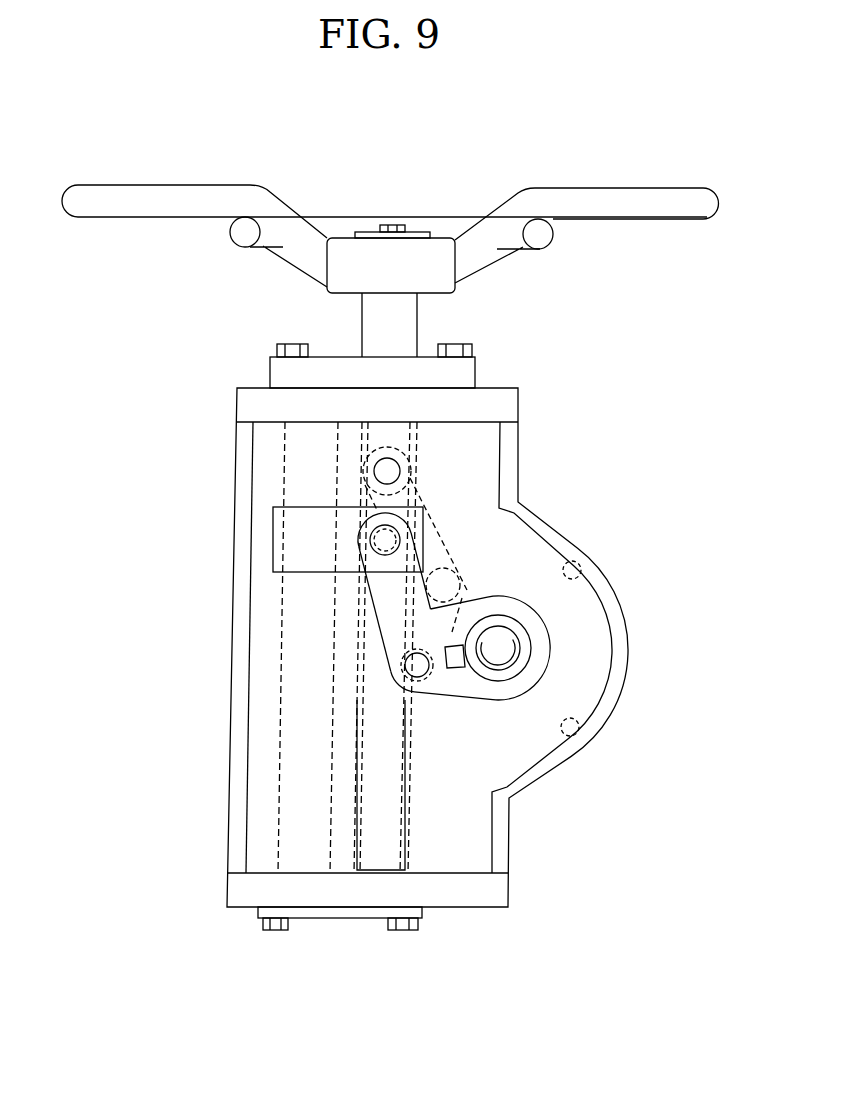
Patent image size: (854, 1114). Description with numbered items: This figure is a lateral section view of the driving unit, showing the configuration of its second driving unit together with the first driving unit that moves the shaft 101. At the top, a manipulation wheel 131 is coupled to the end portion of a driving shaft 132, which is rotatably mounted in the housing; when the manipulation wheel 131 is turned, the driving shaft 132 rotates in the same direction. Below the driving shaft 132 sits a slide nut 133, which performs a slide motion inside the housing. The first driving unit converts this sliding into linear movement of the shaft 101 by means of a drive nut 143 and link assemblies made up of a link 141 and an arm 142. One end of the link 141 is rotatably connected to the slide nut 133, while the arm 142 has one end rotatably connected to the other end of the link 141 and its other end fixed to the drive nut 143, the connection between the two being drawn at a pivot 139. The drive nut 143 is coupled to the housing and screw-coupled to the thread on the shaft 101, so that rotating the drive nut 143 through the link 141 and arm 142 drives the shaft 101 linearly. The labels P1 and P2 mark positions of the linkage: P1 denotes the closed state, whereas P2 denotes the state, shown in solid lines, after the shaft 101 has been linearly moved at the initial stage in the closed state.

The manipulation wheel 131 is at (140, 193).
The driving shaft 132 is at (377, 333).
The slide nut 133 is at (288, 550).
The closed state P1 is at (374, 471).
The state after linear movement in the closed state P2 is at (370, 535).
The link 141 is at (387, 607).
The arm 142 is at (455, 688).
The pivot pin 139 is at (405, 667).
The drive nut 143 is at (517, 662).
The shaft 101 is at (497, 647).